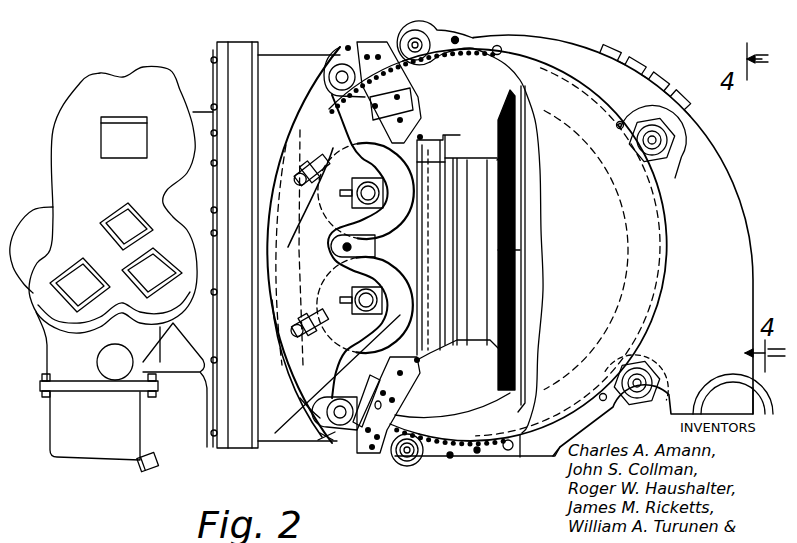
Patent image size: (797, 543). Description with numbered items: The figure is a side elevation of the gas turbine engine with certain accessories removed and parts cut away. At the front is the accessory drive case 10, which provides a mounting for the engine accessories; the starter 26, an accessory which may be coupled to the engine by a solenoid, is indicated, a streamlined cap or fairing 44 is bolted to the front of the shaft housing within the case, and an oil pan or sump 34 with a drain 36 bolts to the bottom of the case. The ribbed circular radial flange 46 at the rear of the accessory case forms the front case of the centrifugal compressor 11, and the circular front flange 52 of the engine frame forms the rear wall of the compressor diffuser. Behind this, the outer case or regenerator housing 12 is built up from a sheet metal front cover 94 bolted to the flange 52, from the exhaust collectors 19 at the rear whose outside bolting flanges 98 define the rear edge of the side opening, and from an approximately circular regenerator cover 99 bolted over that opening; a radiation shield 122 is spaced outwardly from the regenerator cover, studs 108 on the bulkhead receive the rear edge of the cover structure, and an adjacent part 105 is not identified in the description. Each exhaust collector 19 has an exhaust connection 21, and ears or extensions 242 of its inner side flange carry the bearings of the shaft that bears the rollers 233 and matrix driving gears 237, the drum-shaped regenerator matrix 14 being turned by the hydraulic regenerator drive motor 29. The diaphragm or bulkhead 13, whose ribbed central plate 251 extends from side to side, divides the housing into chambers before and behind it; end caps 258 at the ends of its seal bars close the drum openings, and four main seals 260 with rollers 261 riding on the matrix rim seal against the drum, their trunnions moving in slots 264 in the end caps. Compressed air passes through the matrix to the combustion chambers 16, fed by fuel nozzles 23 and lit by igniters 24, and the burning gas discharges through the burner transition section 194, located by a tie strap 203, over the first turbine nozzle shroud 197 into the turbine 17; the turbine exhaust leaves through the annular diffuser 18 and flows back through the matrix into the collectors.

The accessory drive case 10 is at (107, 90).
The compressor 11 is at (212, 58).
The engine case or regenerator housing 12 is at (321, 55).
The diaphragm or bulkhead 13 is at (371, 46).
The regenerator matrix 14 is at (495, 50).
The combustion chambers 16 is at (376, 250).
The turbine 17 is at (472, 153).
The annular diffuser 18 is at (500, 110).
The exhaust collectors 19 is at (728, 163).
The exhaust connection 21 is at (737, 368).
The fuel nozzles 23 is at (360, 182).
The igniter 24 is at (310, 158).
The starter 26 is at (330, 437).
The hydraulic regenerator drive motor 29 is at (638, 72).
The oil pan or sump 34 is at (77, 447).
The drain 36 is at (147, 475).
The streamlined cap or fairing 44 is at (32, 222).
The ribbed circular radial flange 46 is at (210, 398).
The circular front flange 52 is at (230, 450).
The sheet metal front cover 94 is at (303, 58).
The outside bolting flanges 98 is at (460, 458).
The regenerator cover 99 is at (507, 457).
The arm 105 is at (317, 417).
The studs 108 is at (450, 348).
The radiation shield 122 is at (275, 150).
The burner transition section 194 is at (360, 158).
The first turbine nozzle shroud 197 is at (337, 453).
The tie strap 203 is at (365, 248).
The rollers 233 is at (690, 134).
The matrix driving gears 237 is at (627, 152).
The ears or extensions 242 is at (672, 170).
The central plate 251 is at (437, 140).
The end caps 258 is at (364, 460).
The main seals 260 is at (417, 78).
The rollers 261 is at (400, 470).
The slots 264 is at (413, 403).